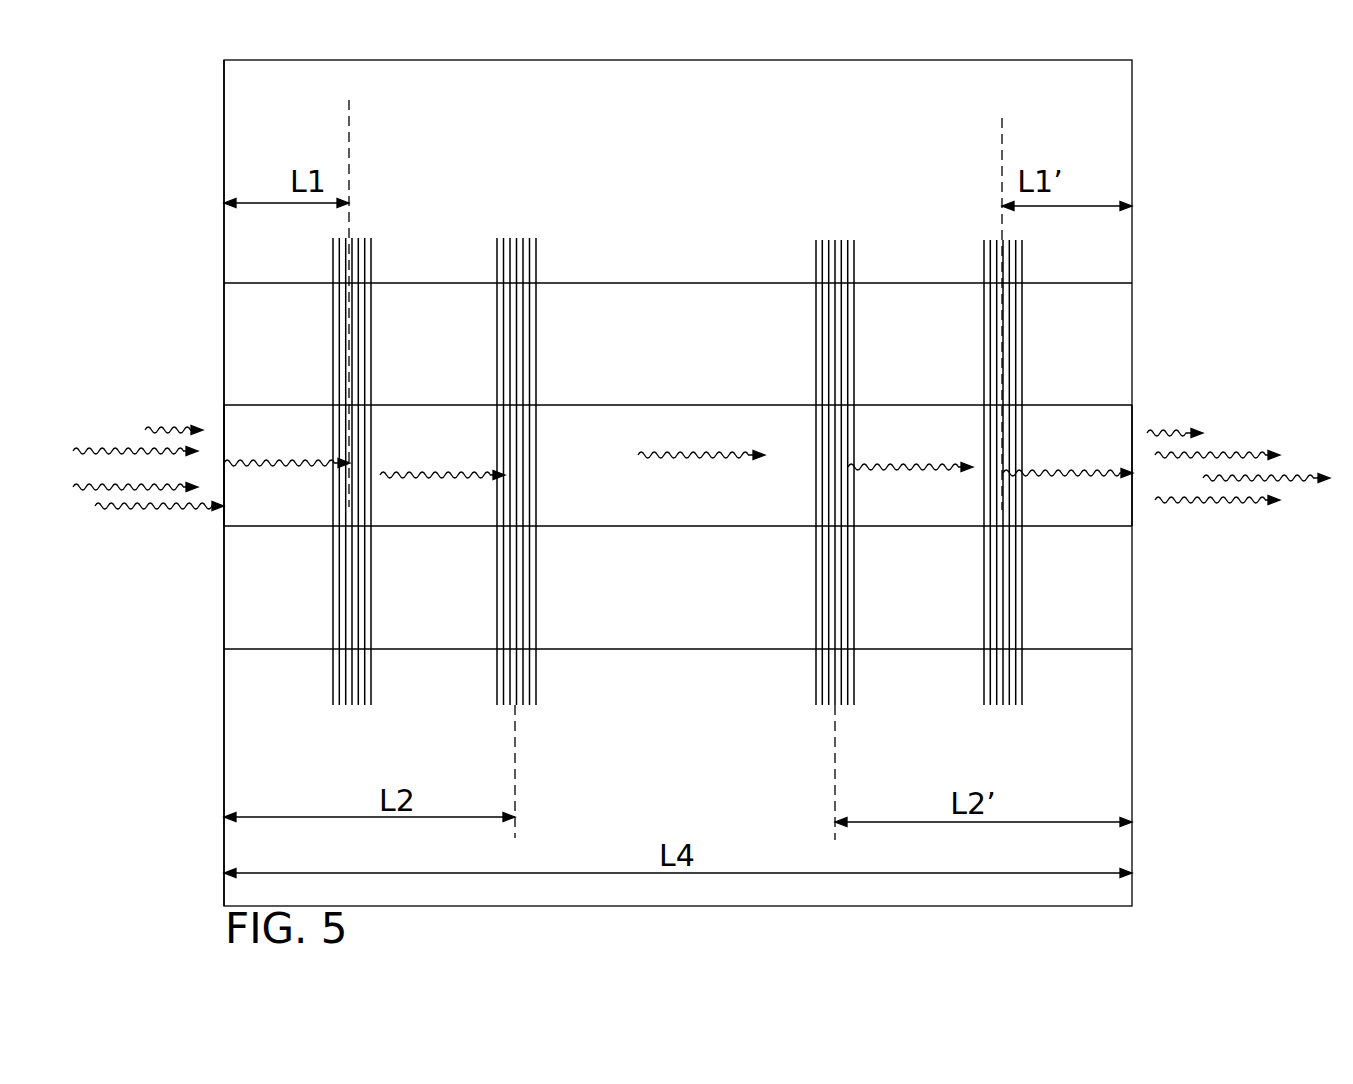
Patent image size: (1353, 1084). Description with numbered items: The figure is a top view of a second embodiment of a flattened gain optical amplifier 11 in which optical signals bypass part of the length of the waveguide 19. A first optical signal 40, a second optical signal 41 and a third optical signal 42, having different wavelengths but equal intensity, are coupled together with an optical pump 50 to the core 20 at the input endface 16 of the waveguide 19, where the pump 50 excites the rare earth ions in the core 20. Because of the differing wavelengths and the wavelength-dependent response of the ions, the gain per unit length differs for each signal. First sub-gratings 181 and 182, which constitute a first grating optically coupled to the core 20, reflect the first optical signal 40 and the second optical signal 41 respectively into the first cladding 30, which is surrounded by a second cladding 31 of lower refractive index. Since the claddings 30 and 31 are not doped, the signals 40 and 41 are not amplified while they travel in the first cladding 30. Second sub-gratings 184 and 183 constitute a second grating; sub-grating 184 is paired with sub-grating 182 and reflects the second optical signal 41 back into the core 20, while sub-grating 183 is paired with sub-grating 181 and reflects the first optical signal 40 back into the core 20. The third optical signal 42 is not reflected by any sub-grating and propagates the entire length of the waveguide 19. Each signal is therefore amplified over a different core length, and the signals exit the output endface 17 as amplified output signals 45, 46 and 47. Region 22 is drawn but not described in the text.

The flattened gain optical amplifier 11 is at (616, 912).
The input endface 16 is at (222, 417).
The output endface 17 is at (1135, 420).
The waveguide 19 is at (661, 174).
The core 20 is at (772, 430).
The upper cladding 22 is at (678, 228).
The first cladding 30 is at (783, 318).
The second cladding 31 is at (257, 103).
The first optical signal 40 is at (95, 488).
The second optical signal 41 is at (137, 452).
The third optical signal 42 is at (123, 515).
The amplified output signal 45 is at (1305, 482).
The amplified output signal 46 is at (1242, 453).
The amplified output signal 47 is at (1230, 503).
The optical pump 50 is at (180, 425).
The first sub-grating 181 is at (352, 708).
The first sub-grating 182 is at (528, 707).
The second sub-grating 183 is at (1000, 712).
The second sub-grating 184 is at (838, 712).